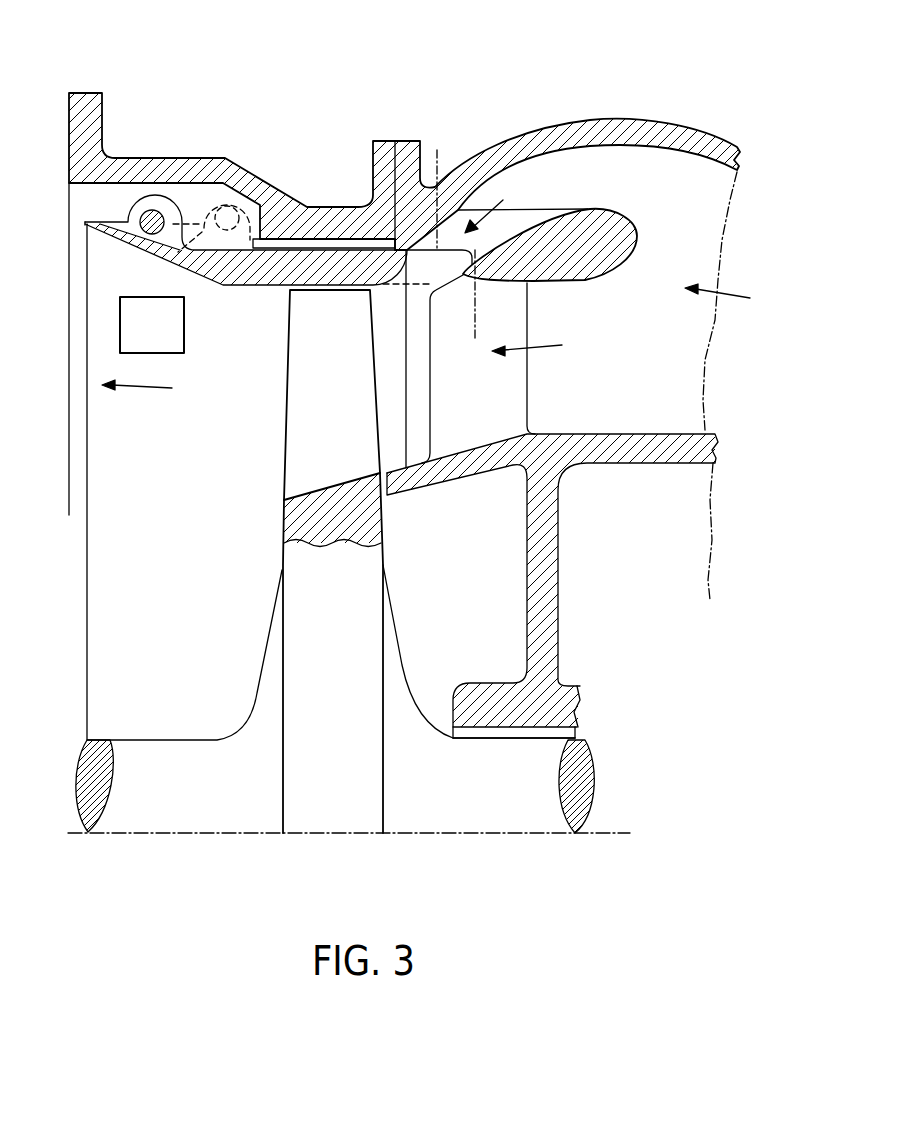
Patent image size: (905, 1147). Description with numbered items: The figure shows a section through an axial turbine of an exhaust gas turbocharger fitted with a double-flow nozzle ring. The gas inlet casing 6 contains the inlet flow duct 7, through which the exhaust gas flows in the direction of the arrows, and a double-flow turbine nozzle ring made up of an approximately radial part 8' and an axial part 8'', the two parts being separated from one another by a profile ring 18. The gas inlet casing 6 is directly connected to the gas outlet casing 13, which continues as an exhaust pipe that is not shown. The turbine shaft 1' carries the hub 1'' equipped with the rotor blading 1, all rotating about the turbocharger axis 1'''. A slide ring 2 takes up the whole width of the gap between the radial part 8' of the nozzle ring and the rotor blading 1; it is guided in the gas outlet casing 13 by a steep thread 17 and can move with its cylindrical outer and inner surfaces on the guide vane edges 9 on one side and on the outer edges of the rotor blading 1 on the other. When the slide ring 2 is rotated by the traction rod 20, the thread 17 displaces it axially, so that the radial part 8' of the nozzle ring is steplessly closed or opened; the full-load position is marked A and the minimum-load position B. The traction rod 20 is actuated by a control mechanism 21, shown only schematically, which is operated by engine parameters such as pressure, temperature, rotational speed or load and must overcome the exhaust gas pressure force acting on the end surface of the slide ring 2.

The rotor blading 1 is at (349, 528).
The turbine shaft 1' is at (335, 819).
The hub 1'' is at (283, 511).
The turbocharger axis 1''' is at (514, 818).
The slide ring 2 is at (243, 275).
The gas inlet casing 6 is at (650, 133).
The inlet flow duct 7 is at (698, 315).
The radial part of the turbine nozzle ring 8' is at (497, 152).
The axial part of the turbine nozzle ring 8'' is at (488, 359).
The guide vane edges 9 is at (437, 150).
The gas outlet casing 13 is at (186, 175).
The steep thread 17 is at (310, 262).
The profile ring 18 is at (590, 250).
The traction rod 20 is at (154, 206).
The control mechanism 21 is at (152, 230).